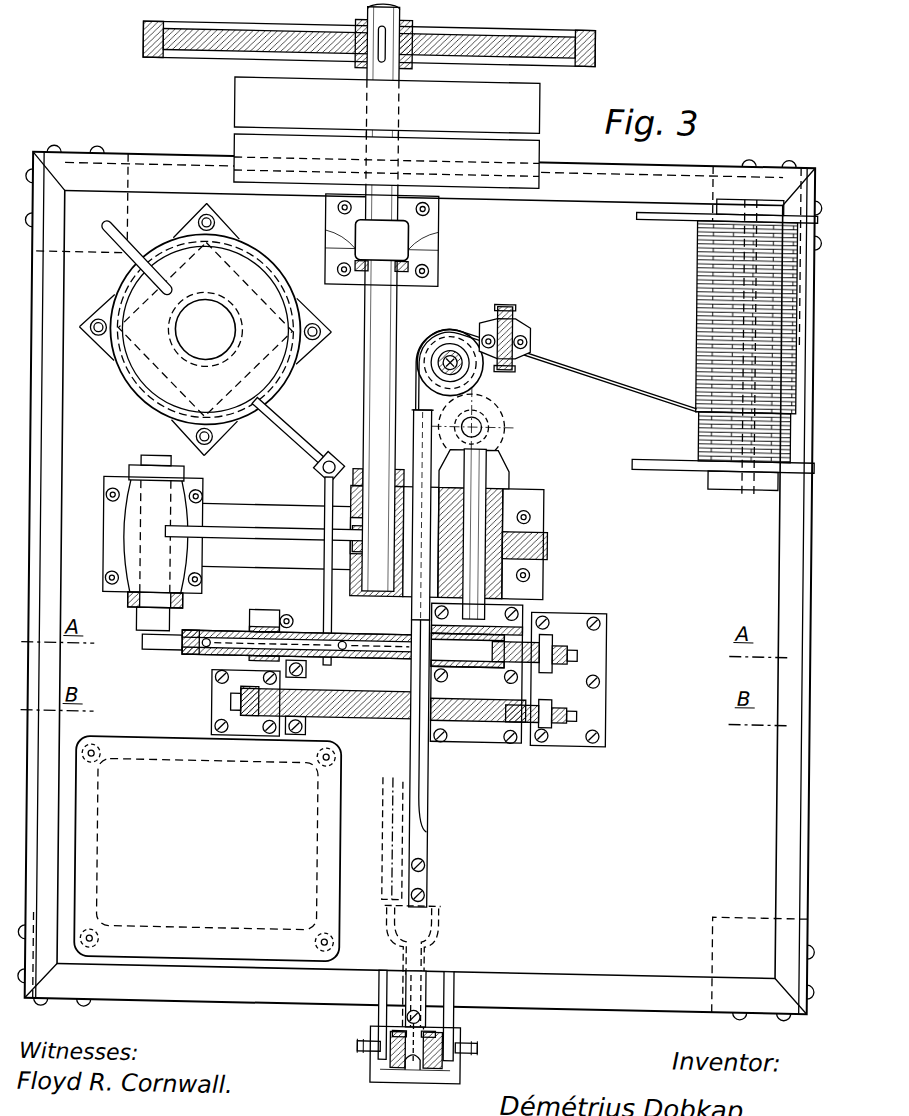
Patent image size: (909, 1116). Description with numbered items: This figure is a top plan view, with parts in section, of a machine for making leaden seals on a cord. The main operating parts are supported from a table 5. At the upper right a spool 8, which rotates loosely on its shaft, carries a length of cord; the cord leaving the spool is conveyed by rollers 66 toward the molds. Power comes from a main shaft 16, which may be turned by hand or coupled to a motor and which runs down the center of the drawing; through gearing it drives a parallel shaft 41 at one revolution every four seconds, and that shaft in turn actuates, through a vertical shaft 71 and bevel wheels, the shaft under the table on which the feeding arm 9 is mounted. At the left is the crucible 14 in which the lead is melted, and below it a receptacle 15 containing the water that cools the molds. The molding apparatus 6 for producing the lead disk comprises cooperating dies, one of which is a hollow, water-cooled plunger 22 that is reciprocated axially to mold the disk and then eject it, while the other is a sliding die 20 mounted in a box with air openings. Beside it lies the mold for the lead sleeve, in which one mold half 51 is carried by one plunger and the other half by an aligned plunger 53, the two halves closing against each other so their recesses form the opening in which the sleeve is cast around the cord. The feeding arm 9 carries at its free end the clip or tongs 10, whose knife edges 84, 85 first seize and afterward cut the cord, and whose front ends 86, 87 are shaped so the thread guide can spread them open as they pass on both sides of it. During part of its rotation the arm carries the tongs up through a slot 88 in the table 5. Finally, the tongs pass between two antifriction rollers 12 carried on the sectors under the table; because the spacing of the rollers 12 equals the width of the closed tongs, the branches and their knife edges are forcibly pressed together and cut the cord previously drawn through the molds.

The table 5 is at (420, 583).
The molding apparatus 6 is at (412, 618).
The spool 8 is at (694, 428).
The feeding arm 9 is at (386, 845).
The clip 10 is at (447, 1069).
The rollers 12 is at (383, 1034).
The crucible 14 is at (211, 433).
The receptacle 15 is at (207, 849).
The main shaft 16 is at (361, 389).
The die 20 is at (518, 675).
The plunger 22 is at (292, 640).
The shaft 41 is at (494, 446).
The mold half 51 is at (345, 724).
The plunger 53 is at (482, 724).
The rollers 66 is at (512, 327).
The vertical shaft 71 is at (487, 412).
The knife edge 84 is at (362, 1046).
The knife edge 85 is at (448, 1060).
The front end of tongs 86 is at (396, 1067).
The front end of tongs 87 is at (428, 1068).
The slot 88 is at (432, 832).